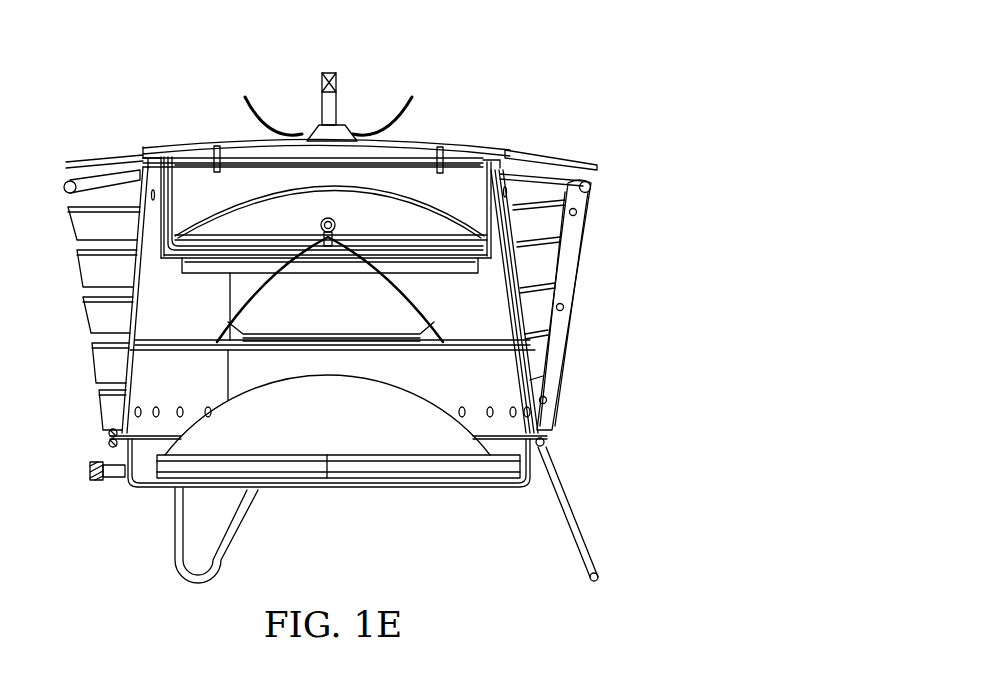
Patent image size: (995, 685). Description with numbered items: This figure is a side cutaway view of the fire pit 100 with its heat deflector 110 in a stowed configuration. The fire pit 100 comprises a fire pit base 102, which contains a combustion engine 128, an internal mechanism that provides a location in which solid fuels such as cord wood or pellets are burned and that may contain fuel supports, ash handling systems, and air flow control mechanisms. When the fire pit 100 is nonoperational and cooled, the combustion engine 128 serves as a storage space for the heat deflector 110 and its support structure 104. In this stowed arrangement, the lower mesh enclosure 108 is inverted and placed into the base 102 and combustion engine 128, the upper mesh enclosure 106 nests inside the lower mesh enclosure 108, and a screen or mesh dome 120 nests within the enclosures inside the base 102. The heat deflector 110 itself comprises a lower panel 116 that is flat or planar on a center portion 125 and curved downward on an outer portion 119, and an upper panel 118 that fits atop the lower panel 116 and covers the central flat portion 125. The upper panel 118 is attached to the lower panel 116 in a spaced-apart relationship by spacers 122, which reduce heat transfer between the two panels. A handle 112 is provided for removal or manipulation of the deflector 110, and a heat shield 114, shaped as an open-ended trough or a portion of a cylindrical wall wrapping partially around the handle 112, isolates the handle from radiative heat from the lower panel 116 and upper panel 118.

The fire pit 100 is at (592, 55).
The fire pit base 102 is at (575, 324).
The support structure 104 is at (160, 253).
The upper mesh enclosure 106 is at (438, 195).
The lower mesh enclosure 108 is at (152, 205).
The heat deflector 110 is at (422, 137).
The handle 112 is at (329, 72).
The heat shield 114 is at (383, 112).
The lower panel 116 is at (548, 162).
The upper panel 118 is at (490, 160).
The outer portion 119 is at (570, 157).
The mesh dome 120 is at (215, 205).
The spacers 122 is at (222, 150).
The center portion 125 is at (278, 176).
The combustion engine 128 is at (532, 268).